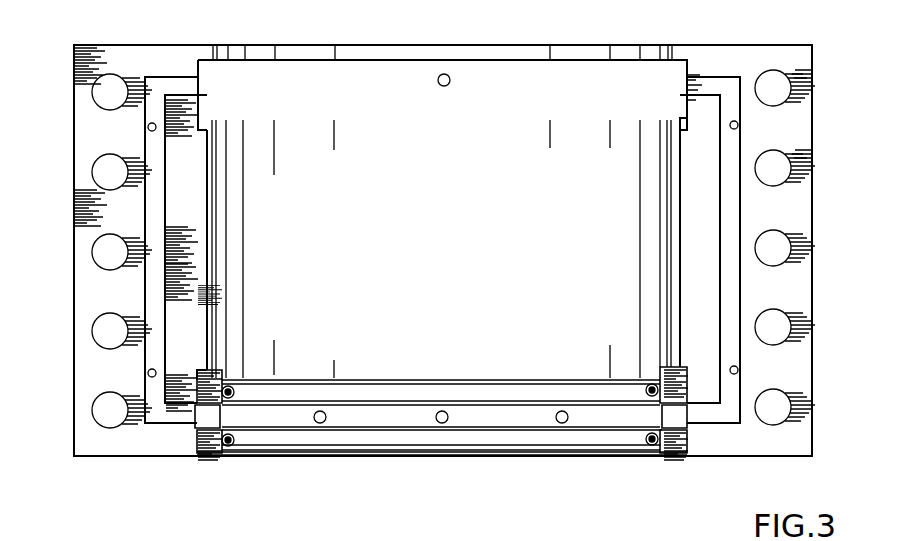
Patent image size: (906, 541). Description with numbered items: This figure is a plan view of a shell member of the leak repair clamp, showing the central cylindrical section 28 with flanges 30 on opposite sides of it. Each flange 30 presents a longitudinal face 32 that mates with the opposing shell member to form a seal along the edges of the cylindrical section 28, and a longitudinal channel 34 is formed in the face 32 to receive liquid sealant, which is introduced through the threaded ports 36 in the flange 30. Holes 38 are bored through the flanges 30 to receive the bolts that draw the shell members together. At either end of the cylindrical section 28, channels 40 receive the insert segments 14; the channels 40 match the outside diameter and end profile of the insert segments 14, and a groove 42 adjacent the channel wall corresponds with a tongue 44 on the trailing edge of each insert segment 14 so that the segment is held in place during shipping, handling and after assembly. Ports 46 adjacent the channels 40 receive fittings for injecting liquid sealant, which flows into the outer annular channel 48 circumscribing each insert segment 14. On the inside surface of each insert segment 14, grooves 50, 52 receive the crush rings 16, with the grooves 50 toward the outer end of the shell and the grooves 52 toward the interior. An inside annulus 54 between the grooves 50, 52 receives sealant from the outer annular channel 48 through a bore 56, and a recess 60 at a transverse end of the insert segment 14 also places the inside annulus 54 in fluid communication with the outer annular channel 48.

The insert segments 14 is at (573, 455).
The crush rings 16 is at (268, 440).
The central cylindrical section 28 is at (390, 285).
The flanges 30 is at (74, 385).
The longitudinal face 32 is at (790, 281).
The longitudinal channel 34 is at (150, 305).
The ports 36 is at (150, 126).
The holes 38 is at (110, 95).
The channels 40 is at (235, 60).
The groove 42 is at (208, 122).
The tongue 44 is at (200, 370).
The ports 46 is at (444, 74).
The outer annular channel 48 is at (193, 423).
The grooves 50 is at (532, 418).
The grooves 52 is at (435, 392).
The inside annulus 54 is at (548, 455).
The bore 56 is at (440, 425).
The recess 60 is at (690, 430).